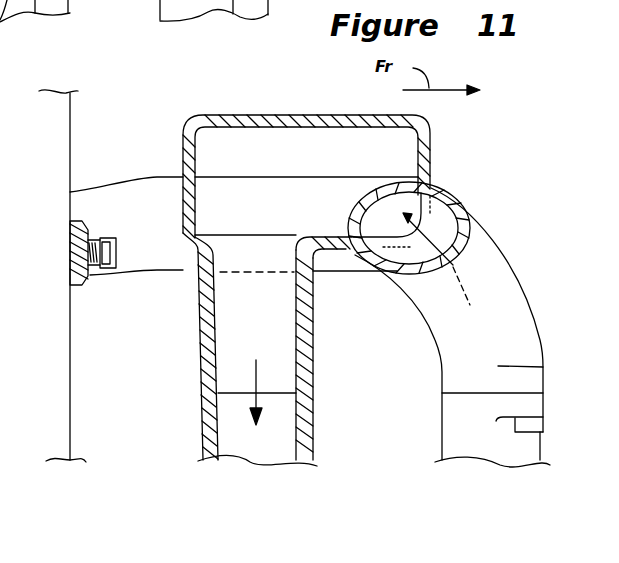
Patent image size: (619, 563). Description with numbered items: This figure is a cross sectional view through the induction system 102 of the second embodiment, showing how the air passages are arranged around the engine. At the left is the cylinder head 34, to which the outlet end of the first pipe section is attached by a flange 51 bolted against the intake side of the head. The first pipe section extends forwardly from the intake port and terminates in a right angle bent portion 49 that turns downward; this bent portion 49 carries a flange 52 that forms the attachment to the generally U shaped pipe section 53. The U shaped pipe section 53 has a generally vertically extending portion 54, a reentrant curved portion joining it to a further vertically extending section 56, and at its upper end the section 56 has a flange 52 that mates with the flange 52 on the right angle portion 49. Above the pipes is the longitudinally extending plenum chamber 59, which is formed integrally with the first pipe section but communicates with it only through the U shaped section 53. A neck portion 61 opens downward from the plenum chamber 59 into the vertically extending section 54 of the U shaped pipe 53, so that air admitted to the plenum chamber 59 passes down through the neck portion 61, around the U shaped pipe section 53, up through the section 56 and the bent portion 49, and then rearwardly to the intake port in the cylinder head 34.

The cylinder head 34 is at (82, 141).
The right angle bent portion 49 is at (440, 320).
The flange 51 is at (91, 223).
The flange 52 is at (533, 408).
The U shaped pipe section 53 is at (207, 13).
The vertically extending portion 54 is at (42, 19).
The further vertically extending section 56 is at (452, 443).
The plenum chamber 59 is at (318, 112).
The neck portion 61 is at (212, 375).
The induction system 102 is at (487, 180).